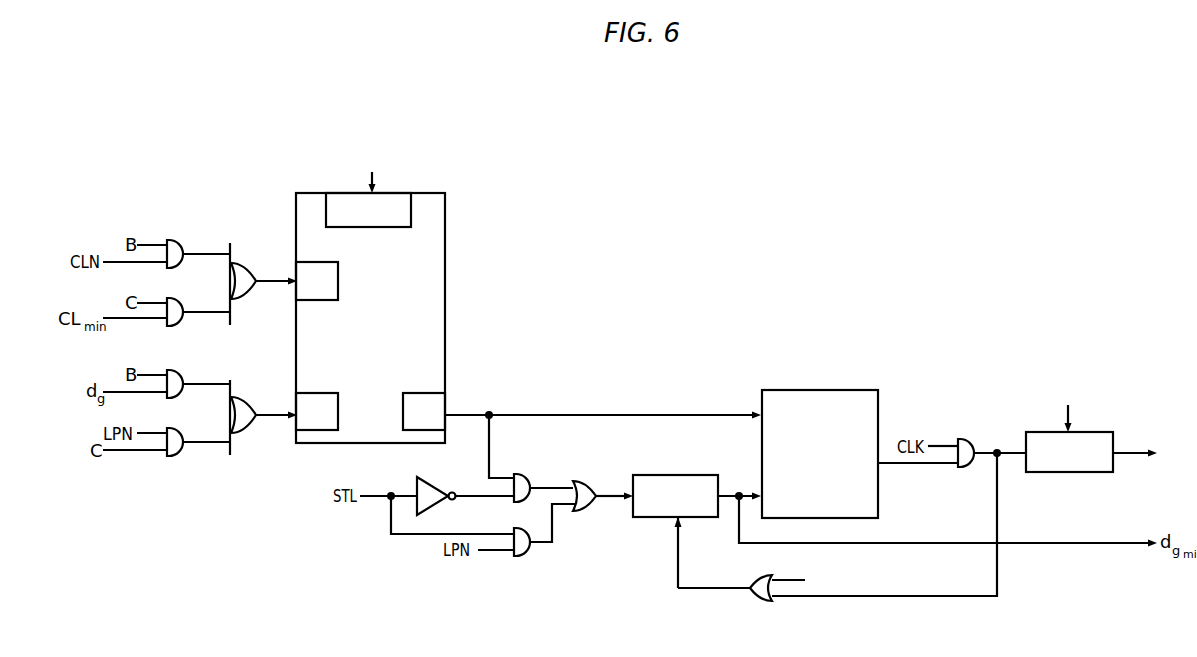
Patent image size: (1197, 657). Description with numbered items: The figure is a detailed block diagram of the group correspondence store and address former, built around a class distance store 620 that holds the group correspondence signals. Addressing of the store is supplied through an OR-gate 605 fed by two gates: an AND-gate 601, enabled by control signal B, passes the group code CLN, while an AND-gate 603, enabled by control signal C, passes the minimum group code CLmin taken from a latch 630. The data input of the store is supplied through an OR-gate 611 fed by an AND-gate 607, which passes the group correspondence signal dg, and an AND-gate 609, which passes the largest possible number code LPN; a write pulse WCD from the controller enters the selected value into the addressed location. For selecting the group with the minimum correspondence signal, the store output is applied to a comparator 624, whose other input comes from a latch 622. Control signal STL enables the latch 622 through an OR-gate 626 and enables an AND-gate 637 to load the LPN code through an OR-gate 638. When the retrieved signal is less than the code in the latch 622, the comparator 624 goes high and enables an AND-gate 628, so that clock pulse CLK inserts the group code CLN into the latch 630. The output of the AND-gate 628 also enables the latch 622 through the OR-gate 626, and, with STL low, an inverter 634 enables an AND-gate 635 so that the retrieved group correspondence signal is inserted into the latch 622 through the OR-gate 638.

The AND-gate 601 is at (181, 240).
The AND-gate 603 is at (181, 298).
The OR-gate 605 is at (252, 268).
The AND-gate 607 is at (181, 370).
The AND-gate 609 is at (181, 428).
The OR-gate 611 is at (252, 402).
The class distance store 620 is at (445, 290).
The latch 622 is at (672, 475).
The comparator 624 is at (806, 390).
The OR-gate 626 is at (758, 577).
The AND-gate 628 is at (968, 440).
The latch 630 is at (1075, 472).
The inverter 634 is at (419, 478).
The AND-gate 635 is at (528, 460).
The AND-gate 637 is at (522, 556).
The OR-gate 638 is at (582, 481).